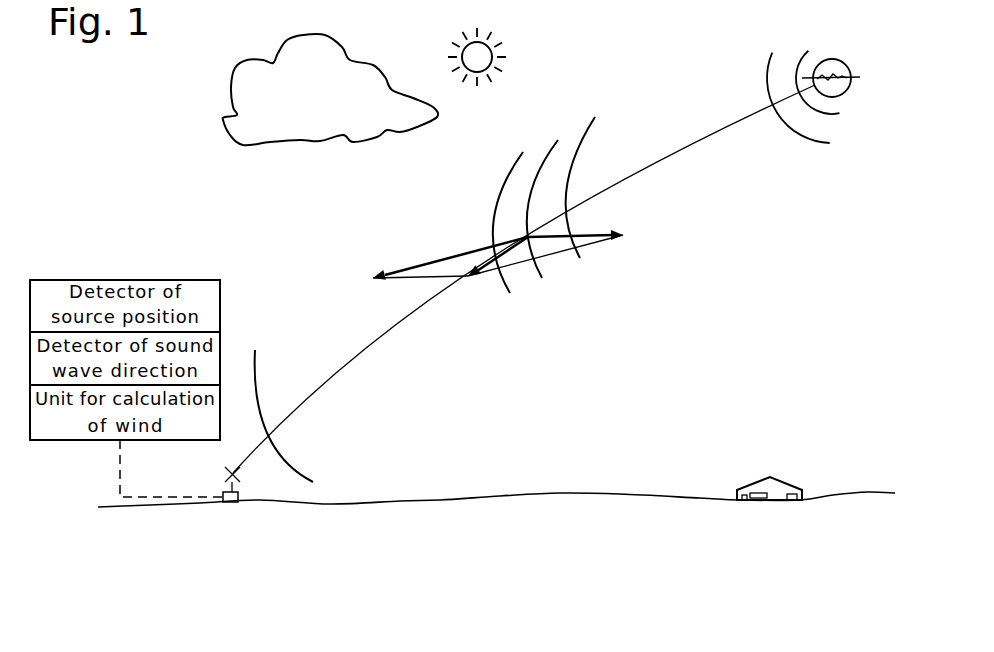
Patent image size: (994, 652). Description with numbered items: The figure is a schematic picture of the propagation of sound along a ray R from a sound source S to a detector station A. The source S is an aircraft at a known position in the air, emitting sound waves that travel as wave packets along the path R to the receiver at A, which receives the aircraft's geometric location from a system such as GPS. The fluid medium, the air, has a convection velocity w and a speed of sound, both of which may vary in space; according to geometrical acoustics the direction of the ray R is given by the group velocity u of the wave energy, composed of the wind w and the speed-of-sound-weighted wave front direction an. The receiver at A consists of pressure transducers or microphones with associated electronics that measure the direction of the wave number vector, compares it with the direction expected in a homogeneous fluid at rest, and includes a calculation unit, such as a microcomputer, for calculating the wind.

The detector station A is at (193, 481).
The sound source S is at (813, 81).
The ray R is at (524, 279).
The convection velocity w is at (590, 242).
The group velocity u is at (498, 269).
The wave number vector direction term an is at (429, 267).